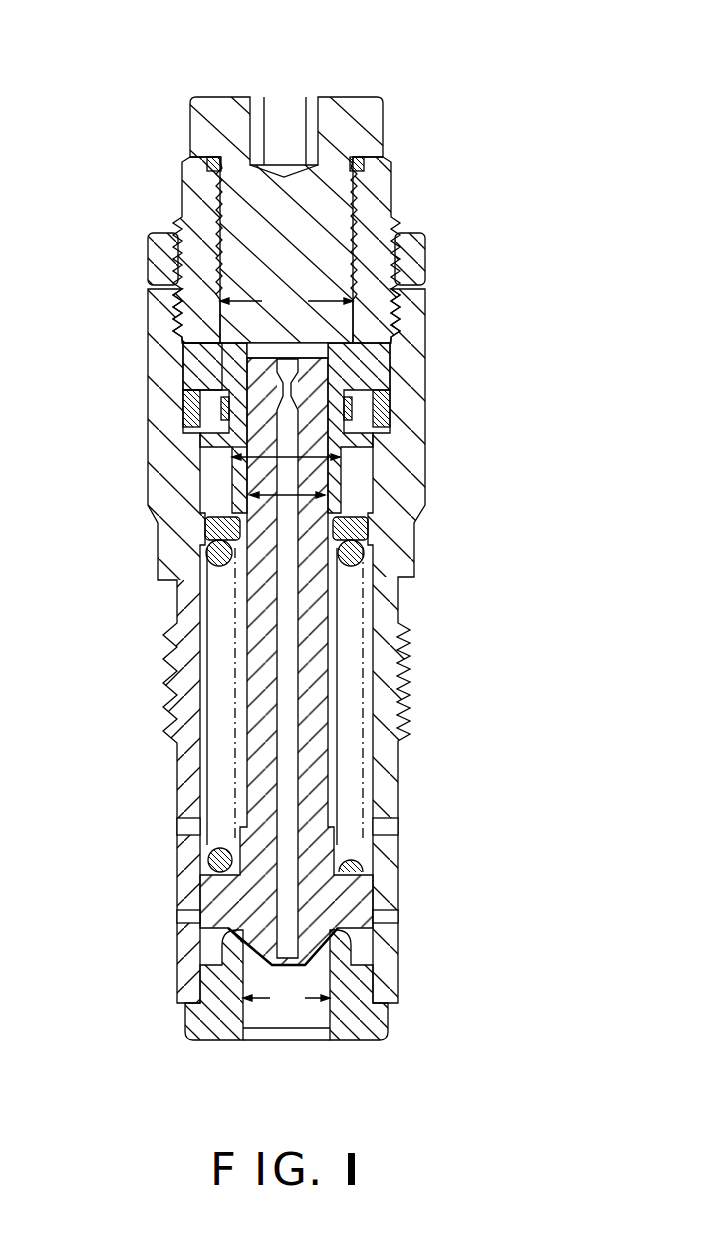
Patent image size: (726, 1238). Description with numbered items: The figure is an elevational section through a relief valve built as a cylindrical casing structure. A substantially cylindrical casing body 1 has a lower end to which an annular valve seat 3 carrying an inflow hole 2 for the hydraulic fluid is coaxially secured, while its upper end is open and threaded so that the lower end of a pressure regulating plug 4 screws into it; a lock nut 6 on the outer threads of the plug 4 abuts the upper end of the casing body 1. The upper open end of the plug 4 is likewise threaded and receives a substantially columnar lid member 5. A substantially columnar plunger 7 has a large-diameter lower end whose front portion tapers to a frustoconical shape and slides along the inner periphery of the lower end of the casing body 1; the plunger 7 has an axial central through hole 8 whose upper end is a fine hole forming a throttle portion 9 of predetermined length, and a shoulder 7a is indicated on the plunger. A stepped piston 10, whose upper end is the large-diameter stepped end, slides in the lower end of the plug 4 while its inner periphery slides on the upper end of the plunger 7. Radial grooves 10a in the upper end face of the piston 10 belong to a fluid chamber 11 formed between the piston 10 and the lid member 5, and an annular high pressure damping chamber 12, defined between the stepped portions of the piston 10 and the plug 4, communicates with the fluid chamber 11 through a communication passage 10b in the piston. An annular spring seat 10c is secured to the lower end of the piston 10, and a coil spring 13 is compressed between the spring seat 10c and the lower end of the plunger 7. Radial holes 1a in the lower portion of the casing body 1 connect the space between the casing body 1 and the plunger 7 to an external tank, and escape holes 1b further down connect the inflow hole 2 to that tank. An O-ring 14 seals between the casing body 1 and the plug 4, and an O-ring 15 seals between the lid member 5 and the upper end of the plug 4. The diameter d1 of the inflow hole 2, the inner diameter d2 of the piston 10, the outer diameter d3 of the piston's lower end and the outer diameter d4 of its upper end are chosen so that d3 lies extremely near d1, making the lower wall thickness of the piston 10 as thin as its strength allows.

The casing body 1 is at (405, 632).
The holes 1a is at (390, 829).
The escape holes 1b is at (388, 933).
The inflow hole 2 is at (327, 1017).
The valve seat 3 is at (380, 1024).
The pressure regulating plug 4 is at (386, 193).
The lid member 5 is at (349, 105).
The lock nut 6 is at (155, 259).
The plunger 7 is at (320, 760).
The piston shoulder 7a is at (233, 444).
The through hole 8 is at (290, 746).
The throttle portion 9 is at (298, 376).
The stepped piston 10 is at (400, 506).
The grooves 10a is at (222, 334).
The communication passage 10b is at (368, 393).
The spring seat 10c is at (205, 525).
The fluid chamber 11 is at (328, 343).
The high pressure damping chamber 12 is at (221, 397).
The spring 13 is at (356, 556).
The O-ring 14 is at (183, 408).
The O-ring 15 is at (184, 169).
The diameter of the inflow hole d1 is at (286, 1001).
The inner diameter of the stepped piston d2 is at (326, 494).
The outer diameter of the lower end of the piston d3 is at (341, 456).
The outer diameter of the upper end of the piston d4 is at (286, 307).